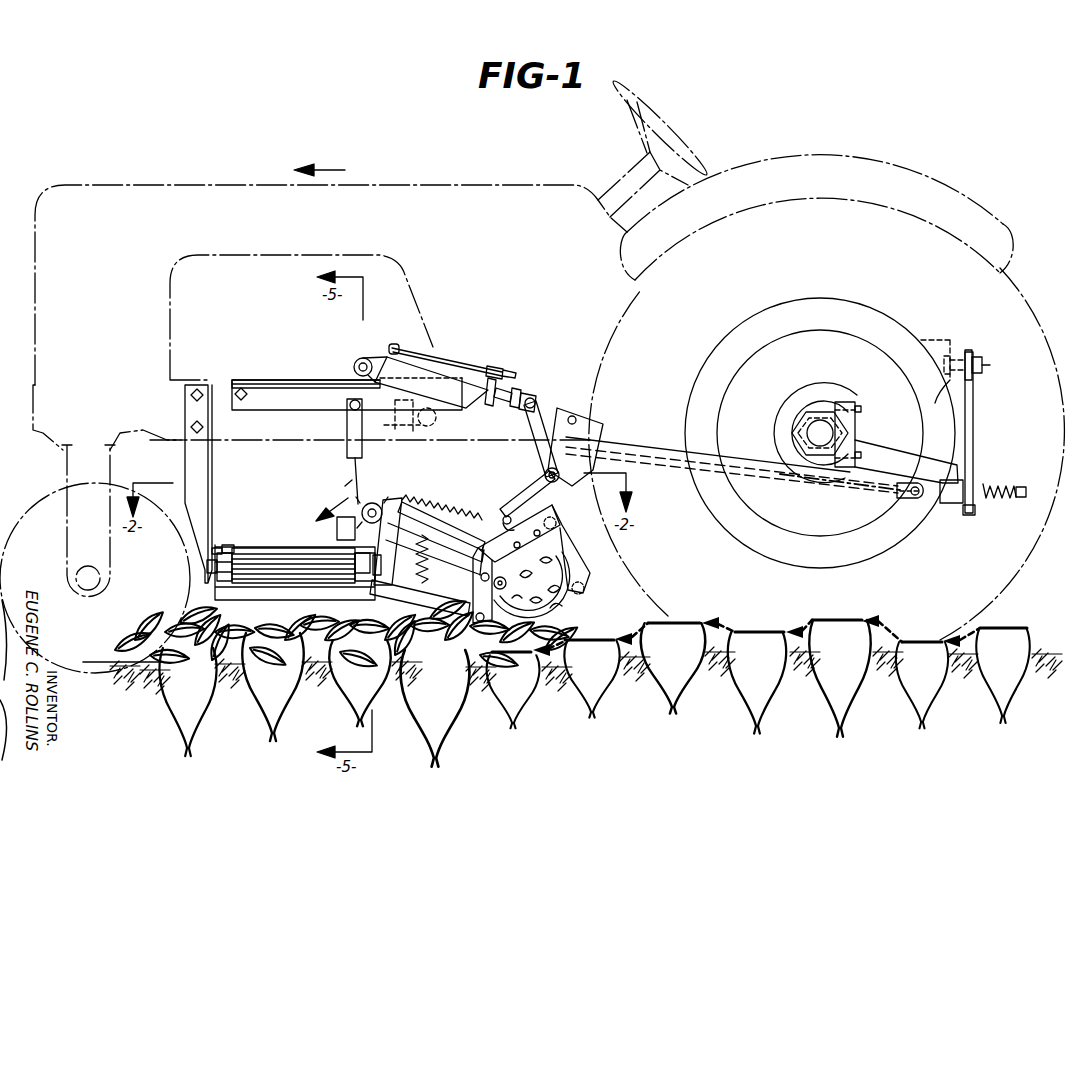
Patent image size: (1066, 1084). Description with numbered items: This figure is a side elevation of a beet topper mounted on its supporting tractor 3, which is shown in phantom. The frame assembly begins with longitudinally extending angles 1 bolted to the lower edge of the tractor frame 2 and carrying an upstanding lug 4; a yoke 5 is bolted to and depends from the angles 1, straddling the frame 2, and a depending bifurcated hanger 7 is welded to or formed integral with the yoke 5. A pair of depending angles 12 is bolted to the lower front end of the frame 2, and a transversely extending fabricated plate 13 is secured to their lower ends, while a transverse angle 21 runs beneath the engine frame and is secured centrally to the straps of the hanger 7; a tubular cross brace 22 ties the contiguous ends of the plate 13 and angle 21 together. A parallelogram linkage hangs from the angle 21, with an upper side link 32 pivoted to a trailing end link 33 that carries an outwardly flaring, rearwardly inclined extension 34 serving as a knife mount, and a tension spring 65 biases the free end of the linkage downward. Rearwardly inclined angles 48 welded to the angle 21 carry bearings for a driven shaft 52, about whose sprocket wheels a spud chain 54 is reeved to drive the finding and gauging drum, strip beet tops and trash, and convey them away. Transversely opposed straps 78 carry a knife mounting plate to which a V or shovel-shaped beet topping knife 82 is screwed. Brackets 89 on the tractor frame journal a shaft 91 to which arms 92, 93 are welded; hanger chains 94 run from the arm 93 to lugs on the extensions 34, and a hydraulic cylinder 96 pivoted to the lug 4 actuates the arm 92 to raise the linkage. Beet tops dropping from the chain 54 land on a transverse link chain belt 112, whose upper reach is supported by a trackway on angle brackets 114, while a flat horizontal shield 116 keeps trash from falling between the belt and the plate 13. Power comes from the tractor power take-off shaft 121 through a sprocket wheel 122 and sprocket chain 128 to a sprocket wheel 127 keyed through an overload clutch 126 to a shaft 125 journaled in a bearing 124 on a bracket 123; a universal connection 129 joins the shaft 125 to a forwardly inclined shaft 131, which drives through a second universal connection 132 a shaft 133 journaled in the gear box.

The angles 1 is at (290, 386).
The frame 2 is at (275, 441).
The tractor 3 is at (36, 283).
The upstanding lug 4 is at (355, 372).
The yoke 5 is at (347, 450).
The bifurcated hanger 7 is at (343, 526).
The depending angles 12 is at (198, 457).
The fabricated plate 13 is at (208, 585).
The angle 21 is at (375, 598).
The tubular cross brace 22 is at (284, 600).
The side parallelogram link 32 is at (456, 518).
The trailing end link 33 is at (485, 600).
The extension 34 is at (505, 580).
The rearwardly inclined angles 48 is at (402, 503).
The driven shaft 52 is at (376, 503).
The spud chain 54 is at (424, 510).
The tension spring 65 is at (430, 596).
The straps 78 is at (578, 605).
The beet topping knife 82 is at (518, 686).
The brackets 89 is at (574, 488).
The shaft 91 is at (544, 473).
The arm 92 is at (534, 444).
The arm 93 is at (514, 497).
The hanger chains 94 is at (503, 516).
The hydraulic cylinder 96 is at (432, 378).
The link chain belt 112 is at (266, 551).
The angle brackets 114 is at (234, 546).
The shield 116 is at (218, 545).
The power take-off shaft 121 is at (990, 364).
The sprocket wheel 122 is at (975, 348).
The bracket 123 is at (888, 456).
The bearing 124 is at (952, 505).
The shaft 125 is at (912, 503).
The overload clutch 126 is at (988, 506).
The sprocket wheel 127 is at (968, 517).
The sprocket chain 128 is at (975, 412).
The universal connection 129 is at (905, 500).
The inclined shaft 131 is at (645, 440).
The universal connection 132 is at (428, 425).
The shaft 133 is at (425, 440).